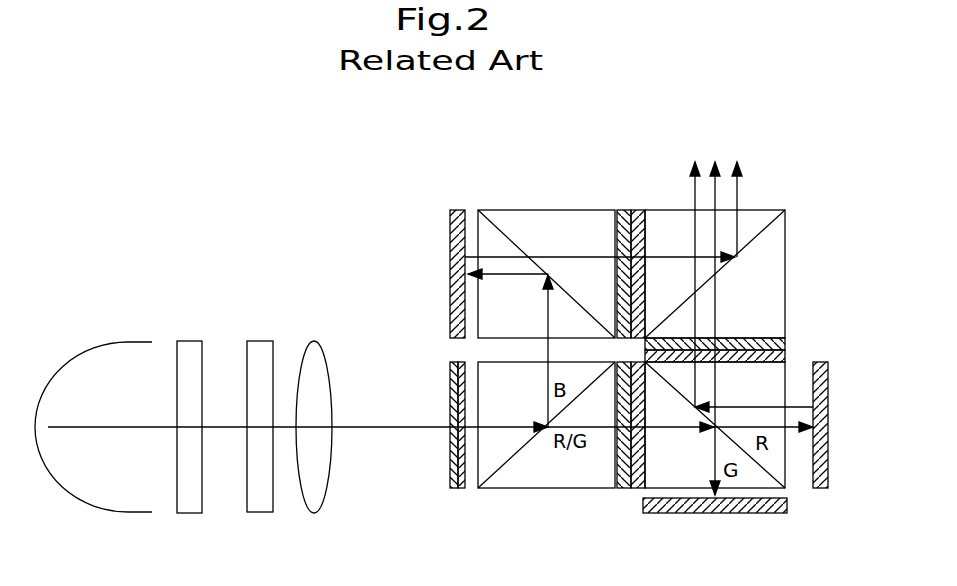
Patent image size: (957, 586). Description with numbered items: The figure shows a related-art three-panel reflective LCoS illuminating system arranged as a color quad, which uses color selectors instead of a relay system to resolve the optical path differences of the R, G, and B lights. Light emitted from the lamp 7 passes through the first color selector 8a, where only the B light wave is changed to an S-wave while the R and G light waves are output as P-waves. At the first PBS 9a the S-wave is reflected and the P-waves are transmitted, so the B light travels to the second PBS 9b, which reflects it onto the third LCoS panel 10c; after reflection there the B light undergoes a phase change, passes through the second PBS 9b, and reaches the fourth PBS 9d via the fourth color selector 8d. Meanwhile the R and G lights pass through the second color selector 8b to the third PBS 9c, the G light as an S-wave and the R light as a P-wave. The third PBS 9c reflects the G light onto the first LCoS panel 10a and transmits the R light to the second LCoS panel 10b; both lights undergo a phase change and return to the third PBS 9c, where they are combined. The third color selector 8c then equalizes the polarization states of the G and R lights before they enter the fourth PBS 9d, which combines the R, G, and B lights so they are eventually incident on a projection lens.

The lamp 7 is at (128, 342).
The first color selector 8a is at (453, 489).
The second color selector 8b is at (621, 489).
The third color selector 8c is at (787, 347).
The fourth color selector 8d is at (622, 212).
The first PBS 9a is at (546, 490).
The second PBS 9b is at (530, 232).
The third PBS 9c is at (778, 462).
The fourth PBS 9d is at (780, 266).
The first LCoS panel 10a is at (829, 396).
The second LCoS panel 10b is at (745, 513).
The third LCoS panel 10c is at (450, 249).